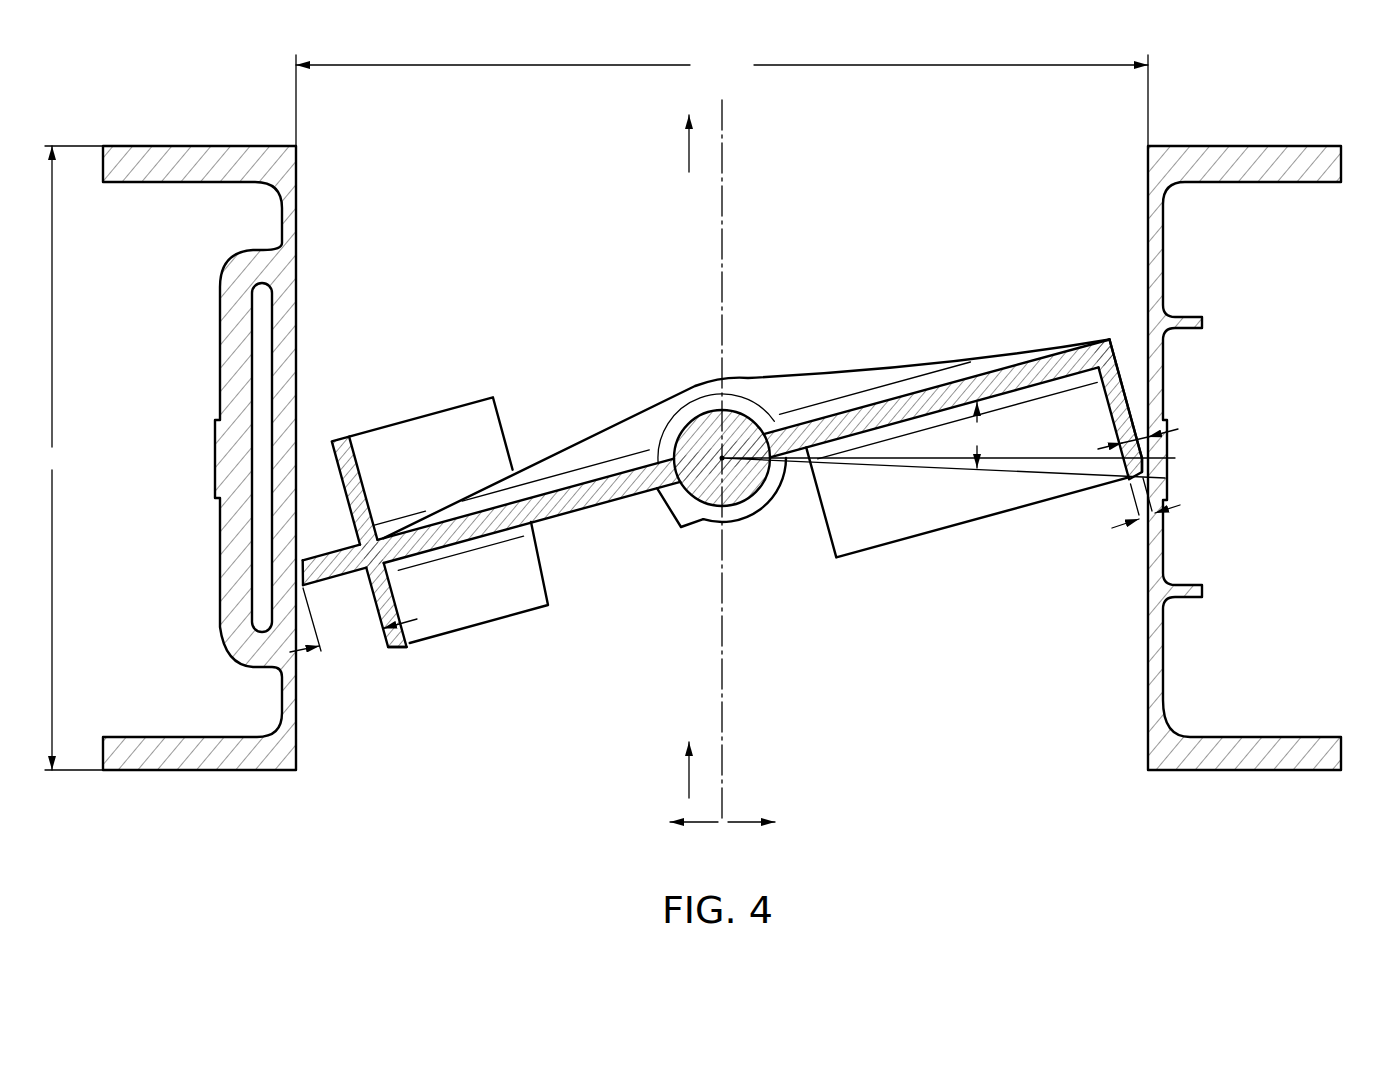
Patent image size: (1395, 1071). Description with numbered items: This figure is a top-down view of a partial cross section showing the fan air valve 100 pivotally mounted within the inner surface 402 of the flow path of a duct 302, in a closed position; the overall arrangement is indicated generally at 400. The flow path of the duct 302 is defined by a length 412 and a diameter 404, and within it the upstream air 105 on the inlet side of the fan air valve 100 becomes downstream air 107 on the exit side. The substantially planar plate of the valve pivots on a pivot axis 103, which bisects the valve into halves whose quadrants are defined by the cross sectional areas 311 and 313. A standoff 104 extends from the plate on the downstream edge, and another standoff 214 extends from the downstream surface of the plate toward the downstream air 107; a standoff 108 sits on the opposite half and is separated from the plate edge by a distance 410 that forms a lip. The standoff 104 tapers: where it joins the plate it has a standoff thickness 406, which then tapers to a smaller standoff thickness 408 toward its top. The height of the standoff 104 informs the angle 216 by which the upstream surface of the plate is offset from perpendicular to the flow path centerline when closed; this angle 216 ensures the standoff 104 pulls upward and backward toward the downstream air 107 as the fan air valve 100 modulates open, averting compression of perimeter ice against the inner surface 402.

The valve assembly 400 is at (1300, 98).
The duct 302 is at (1200, 146).
The inner surface 402 is at (1148, 720).
The diameter 404 is at (722, 98).
The length 412 is at (68, 458).
The fan air valve 100 is at (643, 408).
The pivot axis 103 is at (722, 458).
The standoff 104 is at (1135, 412).
The standoff 108 is at (403, 648).
The standoff 214 is at (438, 474).
The angle 216 is at (979, 445).
The downstream air 107 is at (689, 170).
The upstream air 105 is at (689, 796).
The cross sectional area 313 is at (697, 823).
The cross sectional area 311 is at (748, 823).
The standoff thickness 406 is at (1163, 433).
The standoff thickness 408 is at (1174, 503).
The distance 410 is at (353, 620).